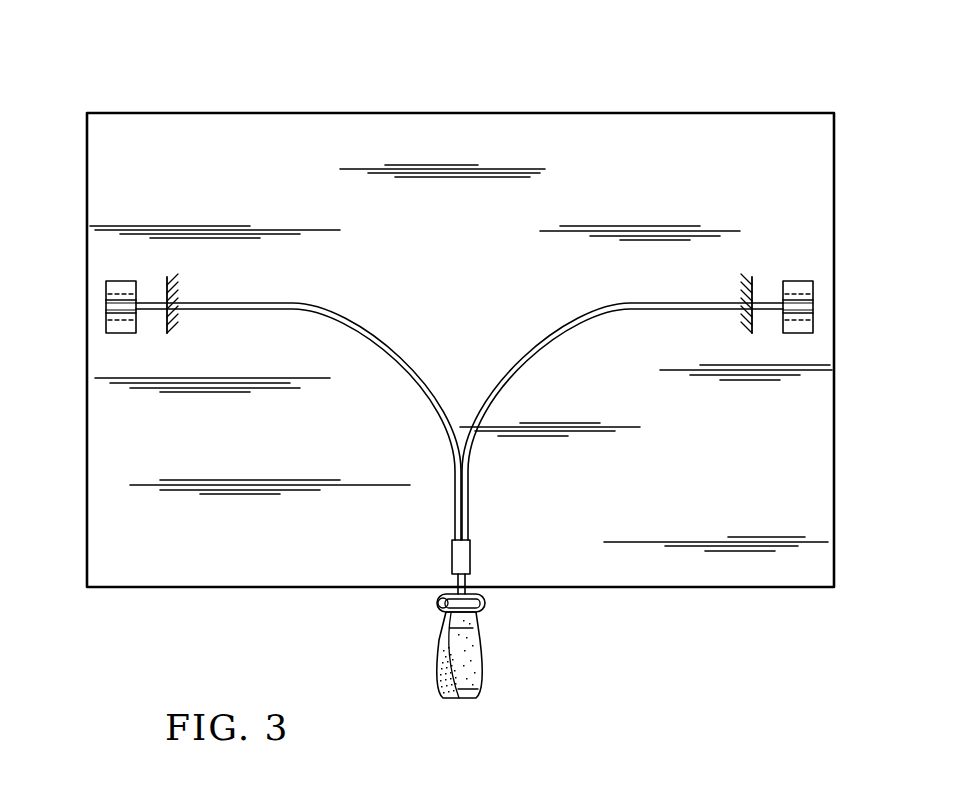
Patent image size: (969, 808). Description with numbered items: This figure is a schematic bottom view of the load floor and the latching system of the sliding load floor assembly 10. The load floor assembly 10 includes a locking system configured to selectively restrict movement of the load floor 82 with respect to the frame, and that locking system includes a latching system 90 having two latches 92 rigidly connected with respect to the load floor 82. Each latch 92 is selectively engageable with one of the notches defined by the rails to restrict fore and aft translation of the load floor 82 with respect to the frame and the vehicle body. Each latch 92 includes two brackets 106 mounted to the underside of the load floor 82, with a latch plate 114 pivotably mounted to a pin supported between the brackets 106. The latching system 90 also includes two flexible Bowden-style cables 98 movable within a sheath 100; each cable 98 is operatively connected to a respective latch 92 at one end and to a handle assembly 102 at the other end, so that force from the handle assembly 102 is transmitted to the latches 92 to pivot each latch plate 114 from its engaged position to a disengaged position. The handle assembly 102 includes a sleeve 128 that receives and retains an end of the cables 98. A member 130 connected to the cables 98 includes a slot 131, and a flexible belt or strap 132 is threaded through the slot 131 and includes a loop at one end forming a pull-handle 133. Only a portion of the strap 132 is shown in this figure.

The load floor assembly 10 is at (757, 88).
The load floor 82 is at (668, 128).
The latching system 90 is at (283, 262).
The latch 92 is at (110, 268).
The cable 98 is at (148, 314).
The sheath 100 is at (328, 318).
The handle assembly 102 is at (456, 553).
The bracket 106 is at (121, 290).
The latch plate 114 is at (106, 310).
The sleeve 128 is at (470, 548).
The member 130 is at (490, 587).
The slot 131 is at (436, 599).
The strap 132 is at (530, 655).
The pull-handle 133 is at (480, 663).